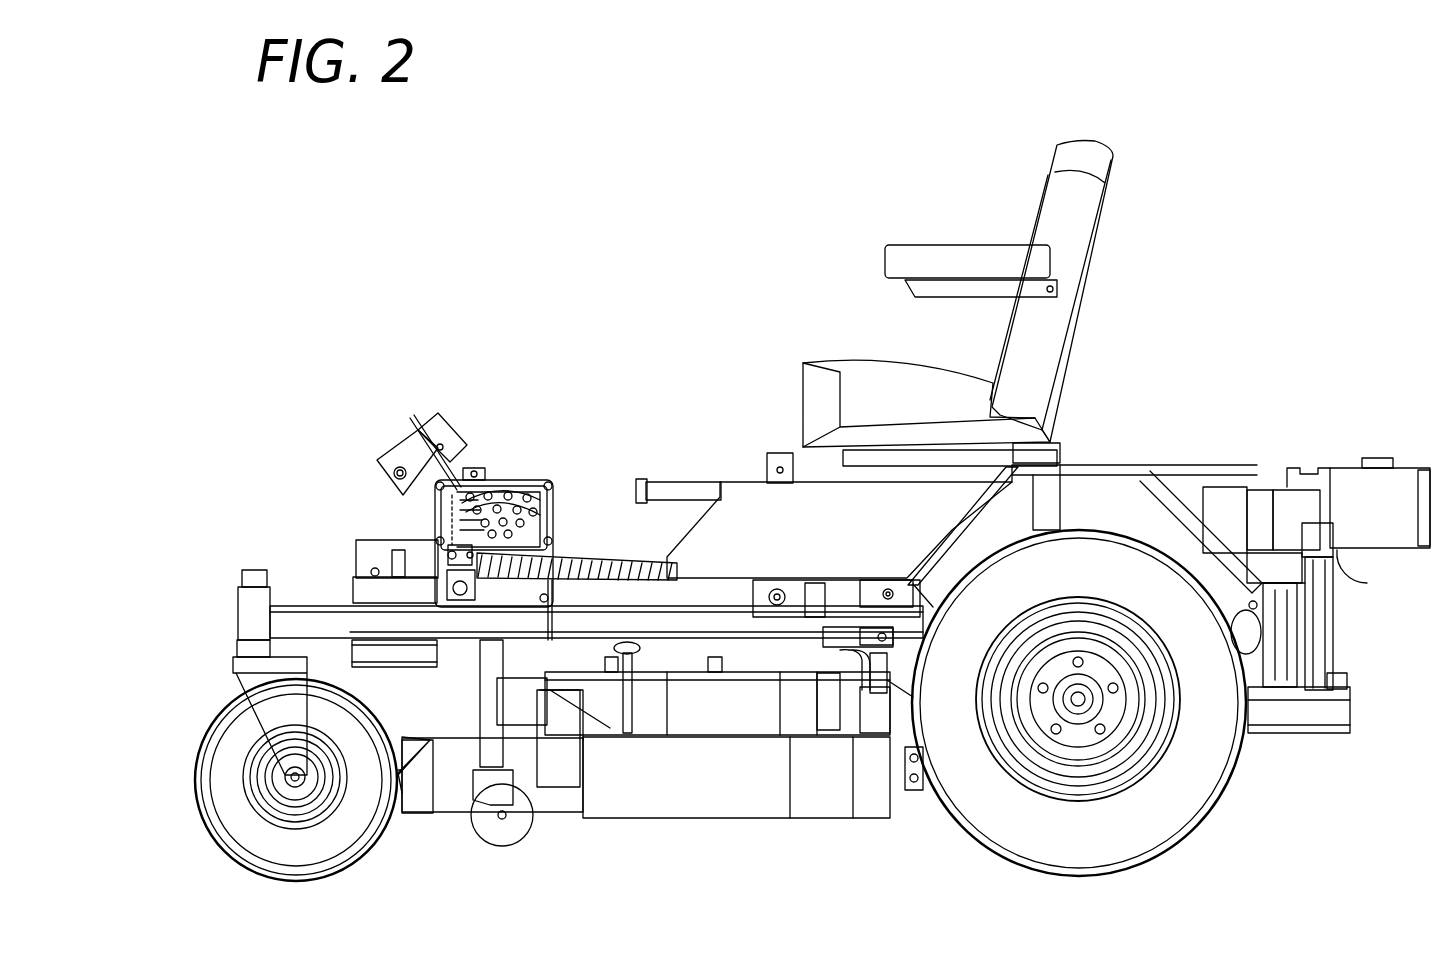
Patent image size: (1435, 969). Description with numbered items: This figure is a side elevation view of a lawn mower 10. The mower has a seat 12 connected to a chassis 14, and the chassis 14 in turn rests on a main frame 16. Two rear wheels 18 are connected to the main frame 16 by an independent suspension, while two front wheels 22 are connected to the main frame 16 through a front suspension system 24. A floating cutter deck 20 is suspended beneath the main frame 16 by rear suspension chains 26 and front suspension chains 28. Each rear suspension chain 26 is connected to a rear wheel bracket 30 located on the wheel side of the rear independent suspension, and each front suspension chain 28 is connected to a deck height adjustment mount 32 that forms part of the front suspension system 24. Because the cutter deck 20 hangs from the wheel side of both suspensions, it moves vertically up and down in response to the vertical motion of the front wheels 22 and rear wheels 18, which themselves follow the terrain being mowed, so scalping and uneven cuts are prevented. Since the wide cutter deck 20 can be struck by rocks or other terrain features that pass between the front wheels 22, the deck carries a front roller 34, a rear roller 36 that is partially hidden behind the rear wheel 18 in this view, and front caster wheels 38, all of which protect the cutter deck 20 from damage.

The lawn mower 10 is at (707, 272).
The seat 12 is at (1070, 202).
The chassis 14 is at (953, 470).
The main frame 16 is at (622, 622).
The rear wheels 18 is at (1189, 777).
The floating cutter deck 20 is at (673, 793).
The front wheels 22 is at (233, 753).
The front suspension system 24 is at (340, 552).
The rear suspension chains 26 is at (857, 697).
The front suspension chains 28 is at (555, 622).
The rear wheel bracket 30 is at (903, 667).
The deck height adjustment mount 32 is at (510, 580).
The front roller 34 is at (398, 783).
The rear roller 36 is at (915, 787).
The front caster wheels 38 is at (517, 820).